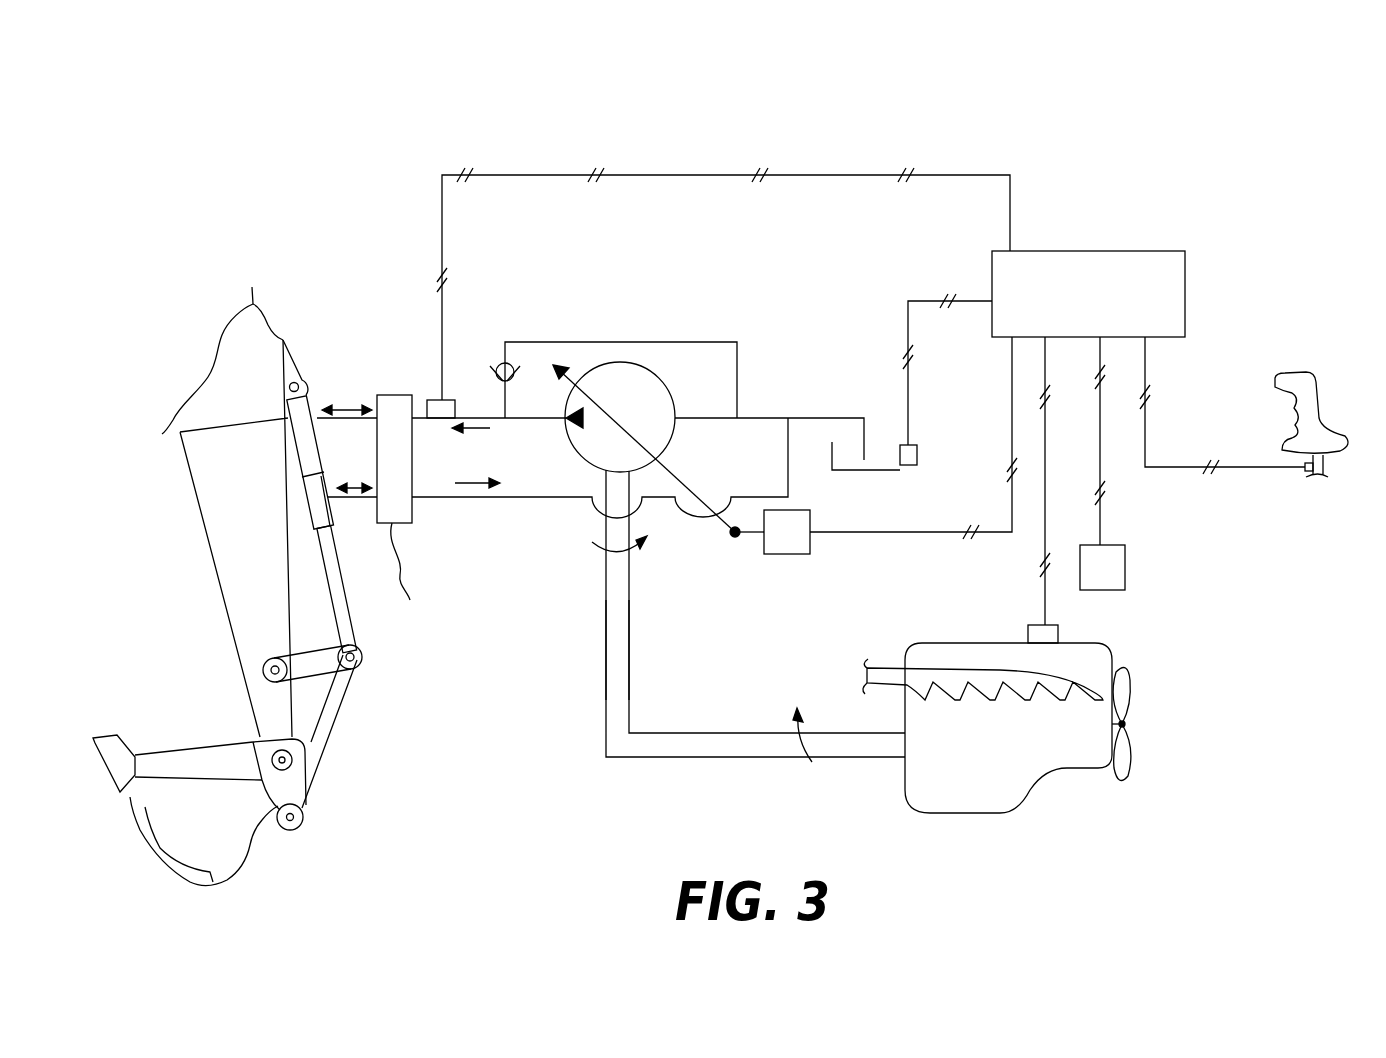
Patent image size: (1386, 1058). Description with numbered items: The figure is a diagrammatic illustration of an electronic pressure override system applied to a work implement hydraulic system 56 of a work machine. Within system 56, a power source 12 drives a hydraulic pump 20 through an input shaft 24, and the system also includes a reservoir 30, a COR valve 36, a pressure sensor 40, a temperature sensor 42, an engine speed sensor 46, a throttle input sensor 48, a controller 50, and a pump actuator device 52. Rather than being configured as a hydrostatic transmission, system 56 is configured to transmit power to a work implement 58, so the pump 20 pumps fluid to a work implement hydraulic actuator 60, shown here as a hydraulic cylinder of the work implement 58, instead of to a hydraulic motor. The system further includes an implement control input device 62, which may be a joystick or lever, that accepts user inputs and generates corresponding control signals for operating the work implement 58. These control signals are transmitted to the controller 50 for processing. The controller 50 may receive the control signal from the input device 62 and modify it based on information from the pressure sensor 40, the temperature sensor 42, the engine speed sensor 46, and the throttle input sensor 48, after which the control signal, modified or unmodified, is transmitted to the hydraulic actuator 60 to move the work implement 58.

The power source 12 is at (1012, 780).
The hydraulic pump 20 is at (639, 402).
The input shaft 24 is at (616, 635).
The reservoir 30 is at (832, 456).
The COR valve 36 is at (492, 358).
The pressure sensor 40 is at (437, 419).
The temperature sensor 42 is at (917, 455).
The engine speed sensor 46 is at (1050, 634).
The throttle input sensor 48 is at (1102, 572).
The controller 50 is at (1172, 262).
The pump actuator device 52 is at (782, 548).
The work implement hydraulic system 56 is at (305, 165).
The work implement 58 is at (230, 513).
The work implement hydraulic actuator 60 is at (300, 412).
The implement control input device 62 is at (1355, 465).